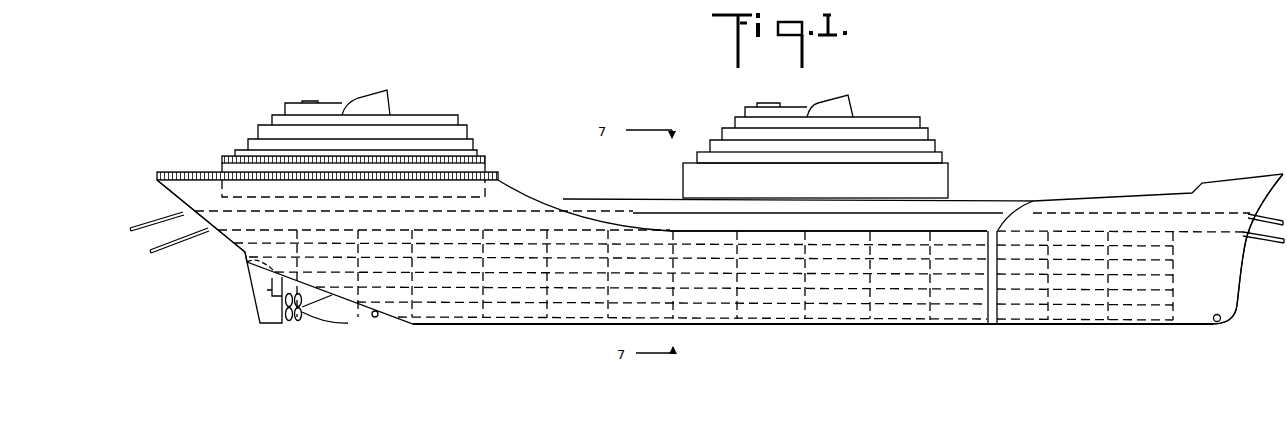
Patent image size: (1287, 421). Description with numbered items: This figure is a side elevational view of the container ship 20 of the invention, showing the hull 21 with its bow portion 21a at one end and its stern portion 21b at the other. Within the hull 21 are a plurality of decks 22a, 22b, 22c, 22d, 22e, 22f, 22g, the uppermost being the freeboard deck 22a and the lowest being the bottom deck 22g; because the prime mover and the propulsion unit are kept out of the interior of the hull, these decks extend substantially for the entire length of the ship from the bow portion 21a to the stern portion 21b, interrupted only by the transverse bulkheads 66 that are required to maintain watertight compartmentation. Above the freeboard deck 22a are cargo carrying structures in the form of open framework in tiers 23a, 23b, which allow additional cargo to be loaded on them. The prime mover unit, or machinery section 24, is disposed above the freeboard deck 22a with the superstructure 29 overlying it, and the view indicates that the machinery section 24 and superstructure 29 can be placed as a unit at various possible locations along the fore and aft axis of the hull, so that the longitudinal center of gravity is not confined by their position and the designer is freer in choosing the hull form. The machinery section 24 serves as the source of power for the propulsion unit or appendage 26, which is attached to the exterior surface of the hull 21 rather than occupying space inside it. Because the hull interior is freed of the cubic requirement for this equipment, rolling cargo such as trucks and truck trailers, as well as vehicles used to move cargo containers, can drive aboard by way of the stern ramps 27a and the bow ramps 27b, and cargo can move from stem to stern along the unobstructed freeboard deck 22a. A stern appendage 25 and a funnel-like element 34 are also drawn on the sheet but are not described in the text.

The container ship 20 is at (596, 329).
The hull 21 is at (715, 327).
The bow portion 21a is at (1230, 257).
The stern portion 21b is at (213, 222).
The freeboard deck 22a is at (727, 231).
The deck 22b is at (744, 247).
The deck 22c is at (744, 261).
The deck 22d is at (744, 275).
The deck 22e is at (744, 290).
The deck 22f is at (744, 304).
The bottom deck 22g is at (744, 319).
The open framework tier 23a is at (990, 199).
The open framework tier 23b is at (1003, 212).
The machinery section 24 is at (482, 192).
The skeg 25 is at (247, 263).
The propulsion unit 26 is at (347, 313).
The stern ramp 27a is at (145, 228).
The bow ramp 27b is at (1267, 212).
The superstructure 29 is at (484, 134).
The funnel 34 is at (383, 108).
The transverse bulkheads 66 is at (479, 320).